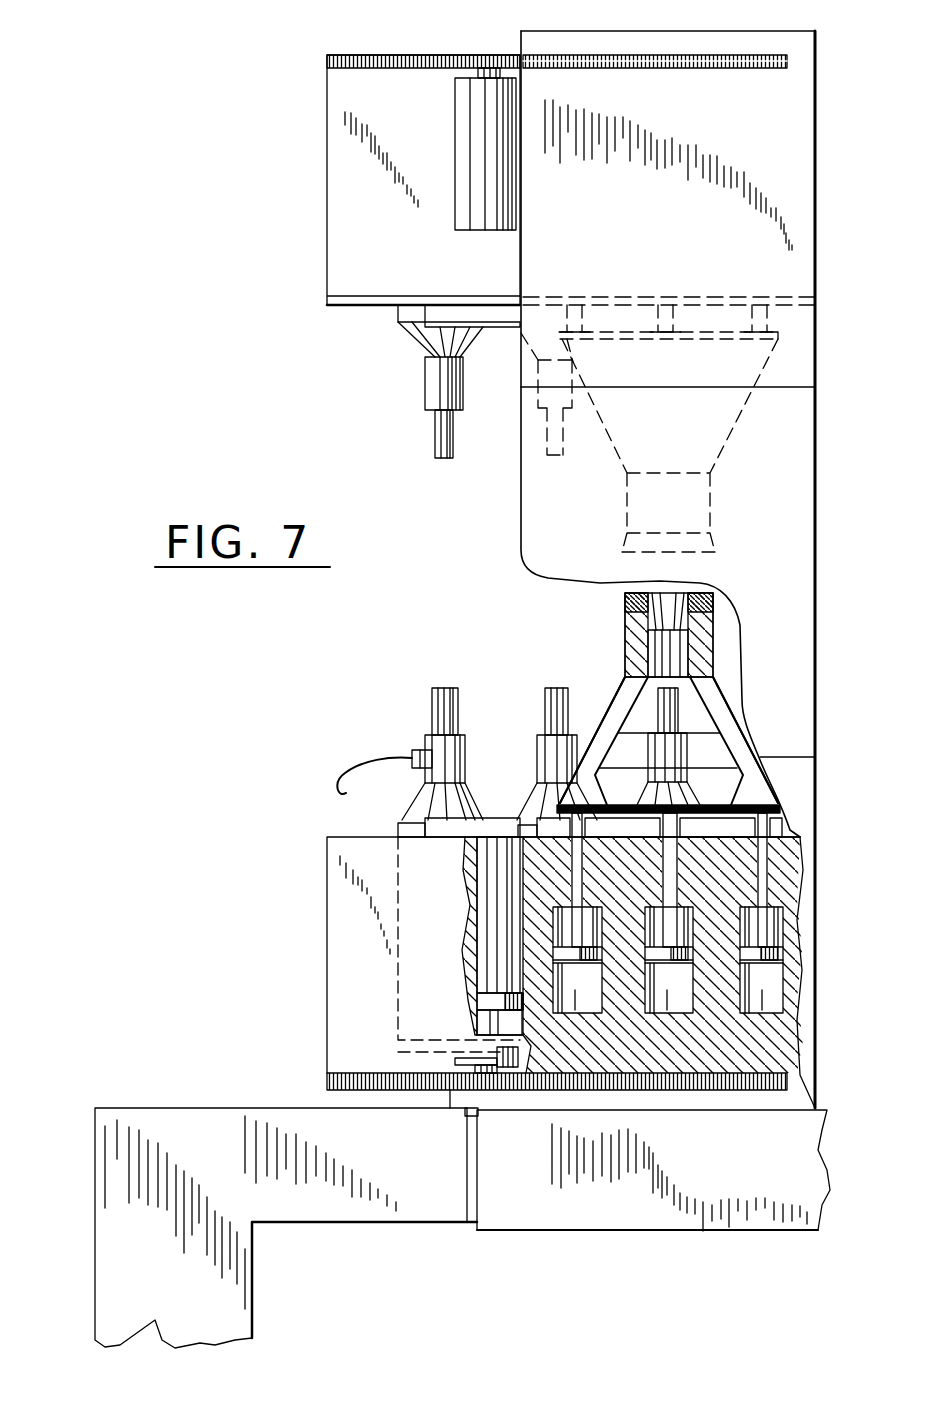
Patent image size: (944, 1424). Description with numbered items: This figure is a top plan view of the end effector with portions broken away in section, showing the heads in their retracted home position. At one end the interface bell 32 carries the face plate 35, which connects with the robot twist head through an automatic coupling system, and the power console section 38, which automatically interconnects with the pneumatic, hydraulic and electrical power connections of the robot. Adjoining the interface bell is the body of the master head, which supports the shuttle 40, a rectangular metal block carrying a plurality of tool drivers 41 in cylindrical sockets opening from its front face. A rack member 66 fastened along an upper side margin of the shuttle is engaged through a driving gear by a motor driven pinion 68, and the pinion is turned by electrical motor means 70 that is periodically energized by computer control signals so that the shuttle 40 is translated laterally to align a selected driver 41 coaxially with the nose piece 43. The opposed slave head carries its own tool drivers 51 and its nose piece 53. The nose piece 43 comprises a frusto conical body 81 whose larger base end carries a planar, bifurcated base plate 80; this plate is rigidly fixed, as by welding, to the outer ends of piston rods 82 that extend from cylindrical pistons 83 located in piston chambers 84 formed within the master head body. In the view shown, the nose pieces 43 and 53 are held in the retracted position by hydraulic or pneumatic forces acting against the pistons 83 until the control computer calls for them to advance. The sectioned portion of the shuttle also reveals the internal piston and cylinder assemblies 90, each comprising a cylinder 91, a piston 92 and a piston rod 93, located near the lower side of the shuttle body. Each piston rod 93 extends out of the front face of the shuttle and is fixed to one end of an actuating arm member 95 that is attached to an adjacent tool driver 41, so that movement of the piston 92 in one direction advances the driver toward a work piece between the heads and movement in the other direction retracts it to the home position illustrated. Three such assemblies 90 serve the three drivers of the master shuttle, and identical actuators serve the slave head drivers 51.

The interface bell 32 is at (540, 1199).
The face plate 35 is at (588, 1236).
The power console section 38 is at (240, 1176).
The shuttle means 40 is at (321, 907).
The tool driver 41 is at (425, 797).
The nose piece 43 is at (607, 692).
The tool driver 51 is at (432, 357).
The nose piece 53 is at (735, 427).
The rack member 66 is at (327, 60).
The motor driven pinion 68 is at (490, 55).
The electrical motor means 70 is at (462, 142).
The base plate 80 is at (757, 790).
The frusto conical body 81 is at (737, 748).
The piston rod 82 is at (752, 837).
The piston 83 is at (780, 945).
The piston chamber 84 is at (767, 988).
The piston and cylinder assembly 90 is at (456, 866).
The cylinder 91 is at (485, 905).
The piston 92 is at (493, 990).
The piston rod 93 is at (502, 930).
The actuating arm member 95 is at (435, 828).